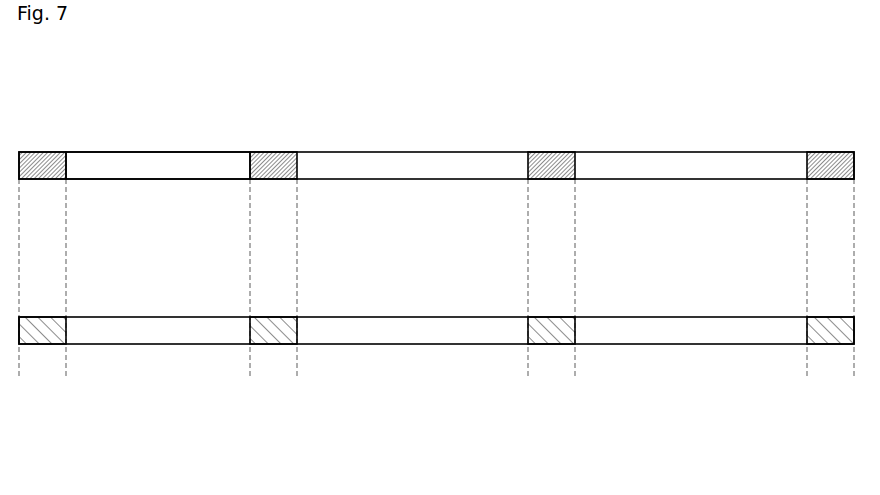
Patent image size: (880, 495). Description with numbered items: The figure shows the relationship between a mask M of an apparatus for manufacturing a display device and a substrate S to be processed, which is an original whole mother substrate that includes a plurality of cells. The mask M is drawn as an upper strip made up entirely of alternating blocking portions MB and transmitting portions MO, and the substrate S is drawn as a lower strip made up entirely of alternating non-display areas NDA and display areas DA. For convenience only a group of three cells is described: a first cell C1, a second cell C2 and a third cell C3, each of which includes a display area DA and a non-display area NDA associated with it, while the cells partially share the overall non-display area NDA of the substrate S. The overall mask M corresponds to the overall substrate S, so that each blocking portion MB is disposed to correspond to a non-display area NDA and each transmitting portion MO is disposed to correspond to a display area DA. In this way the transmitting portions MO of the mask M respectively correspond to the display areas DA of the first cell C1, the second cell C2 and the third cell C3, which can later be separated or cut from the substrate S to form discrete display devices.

The mask M is at (436, 117).
The transmitting portion MO is at (260, 80).
The blocking portion MB is at (270, 165).
The substrate S is at (290, 330).
The non-display area NDA is at (65, 369).
The display area DA is at (67, 369).
The first cell C1 is at (161, 357).
The second cell C2 is at (424, 357).
The third cell C3 is at (713, 357).